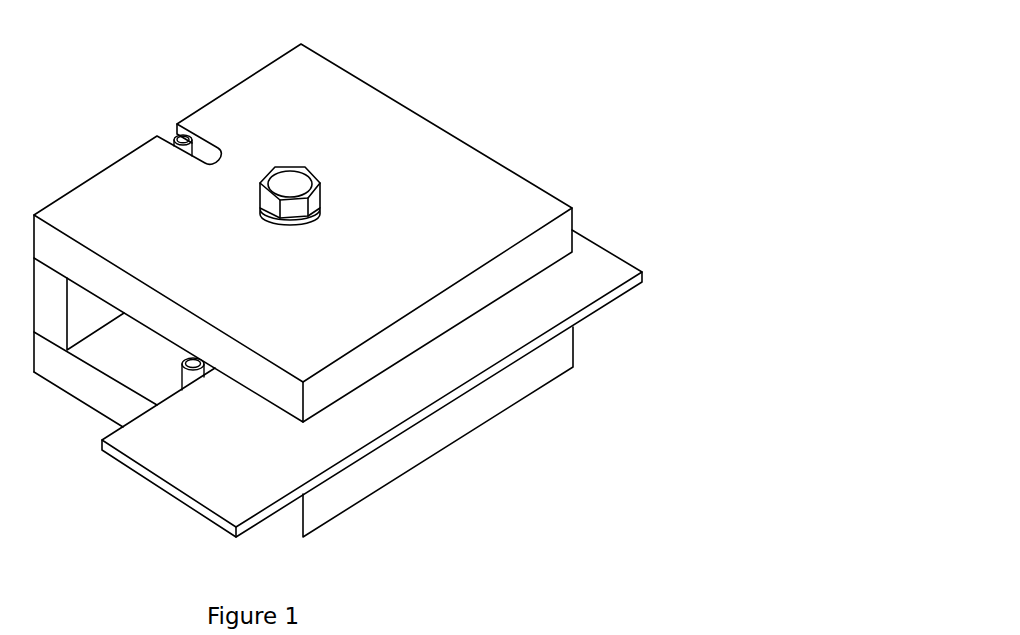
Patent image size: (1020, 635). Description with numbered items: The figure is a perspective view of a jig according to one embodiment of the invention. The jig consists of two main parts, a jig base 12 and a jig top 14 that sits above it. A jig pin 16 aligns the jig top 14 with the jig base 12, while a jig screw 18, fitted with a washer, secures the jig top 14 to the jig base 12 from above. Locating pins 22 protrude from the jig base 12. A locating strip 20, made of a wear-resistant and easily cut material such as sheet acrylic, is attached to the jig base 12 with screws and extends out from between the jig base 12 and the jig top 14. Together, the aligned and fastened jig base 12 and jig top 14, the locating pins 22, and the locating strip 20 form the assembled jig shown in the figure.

The jig base 12 is at (425, 442).
The jig top 14 is at (417, 228).
The jig pin 16 is at (175, 134).
The jig screw 18 is at (293, 183).
The locating strip 20 is at (578, 287).
The locating pins 22 is at (182, 389).